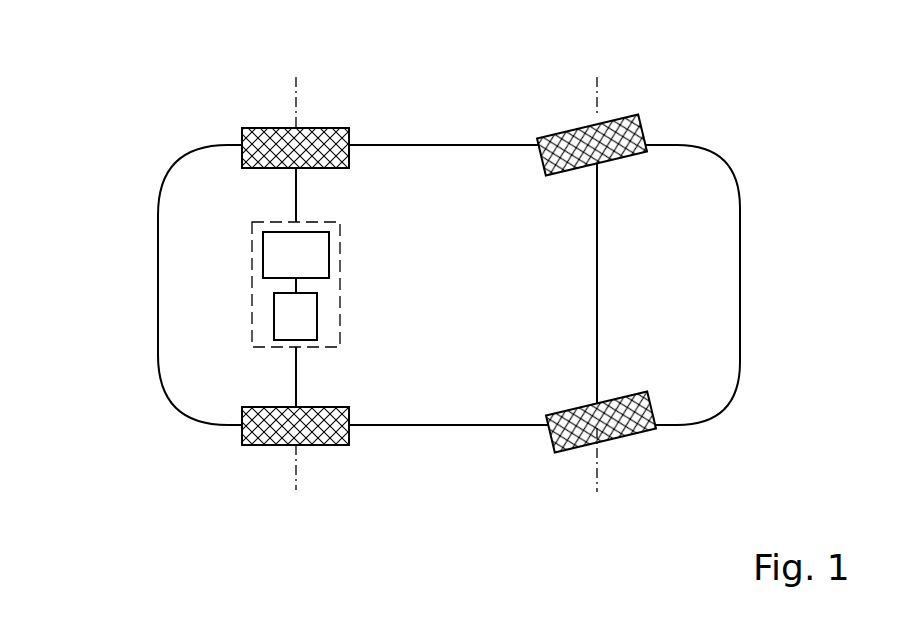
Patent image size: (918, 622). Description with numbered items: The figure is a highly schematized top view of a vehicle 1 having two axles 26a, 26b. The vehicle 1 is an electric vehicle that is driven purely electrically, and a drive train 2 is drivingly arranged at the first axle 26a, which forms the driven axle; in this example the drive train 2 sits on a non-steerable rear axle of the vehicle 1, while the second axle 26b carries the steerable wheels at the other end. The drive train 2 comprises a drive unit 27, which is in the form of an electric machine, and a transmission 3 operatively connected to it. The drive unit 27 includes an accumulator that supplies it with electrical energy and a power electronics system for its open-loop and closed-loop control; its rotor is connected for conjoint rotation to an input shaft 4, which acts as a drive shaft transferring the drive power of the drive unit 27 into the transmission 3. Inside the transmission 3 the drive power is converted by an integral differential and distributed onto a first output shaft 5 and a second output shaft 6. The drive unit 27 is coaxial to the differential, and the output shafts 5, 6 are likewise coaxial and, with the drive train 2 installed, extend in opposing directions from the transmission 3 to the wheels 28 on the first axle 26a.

The vehicle 1 is at (177, 111).
The drive train 2 is at (253, 250).
The transmission 3 is at (280, 264).
The input shaft 4 is at (293, 285).
The first output shaft 5 is at (294, 382).
The second output shaft 6 is at (294, 203).
The first axle 26a is at (295, 100).
The second axle 26b is at (600, 100).
The drive unit 27 is at (290, 320).
The wheels 28 is at (316, 128).